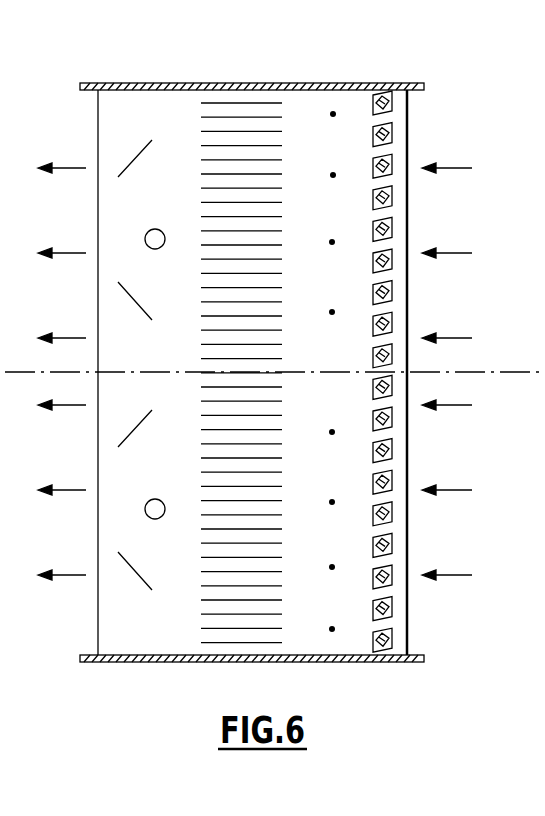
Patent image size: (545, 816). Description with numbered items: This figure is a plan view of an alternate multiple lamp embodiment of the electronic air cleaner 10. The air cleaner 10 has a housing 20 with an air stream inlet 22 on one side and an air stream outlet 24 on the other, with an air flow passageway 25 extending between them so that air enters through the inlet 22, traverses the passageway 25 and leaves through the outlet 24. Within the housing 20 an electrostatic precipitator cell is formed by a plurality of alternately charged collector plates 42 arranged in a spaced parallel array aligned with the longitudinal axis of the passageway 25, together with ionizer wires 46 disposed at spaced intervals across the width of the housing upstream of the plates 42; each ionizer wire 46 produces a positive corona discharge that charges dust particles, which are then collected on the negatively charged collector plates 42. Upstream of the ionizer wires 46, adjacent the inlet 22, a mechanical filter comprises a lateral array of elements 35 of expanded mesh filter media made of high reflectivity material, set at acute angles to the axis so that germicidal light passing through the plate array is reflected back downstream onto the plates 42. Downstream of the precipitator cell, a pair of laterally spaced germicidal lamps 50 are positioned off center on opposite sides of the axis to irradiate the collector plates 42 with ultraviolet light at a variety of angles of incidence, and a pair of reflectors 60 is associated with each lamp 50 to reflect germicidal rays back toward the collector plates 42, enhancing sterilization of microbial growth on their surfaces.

The electronic air cleaner 10 is at (89, 79).
The housing 20 is at (290, 84).
The air stream inlet 22 is at (408, 222).
The air stream outlet 24 is at (97, 620).
The air flow passageway 25 is at (346, 549).
The elements of expanded mesh filter media 35 is at (393, 547).
The collector plates 42 is at (263, 158).
The ionizer wires 46 is at (332, 245).
The germicidal lamp 50 is at (160, 229).
The reflectors 60 is at (136, 159).